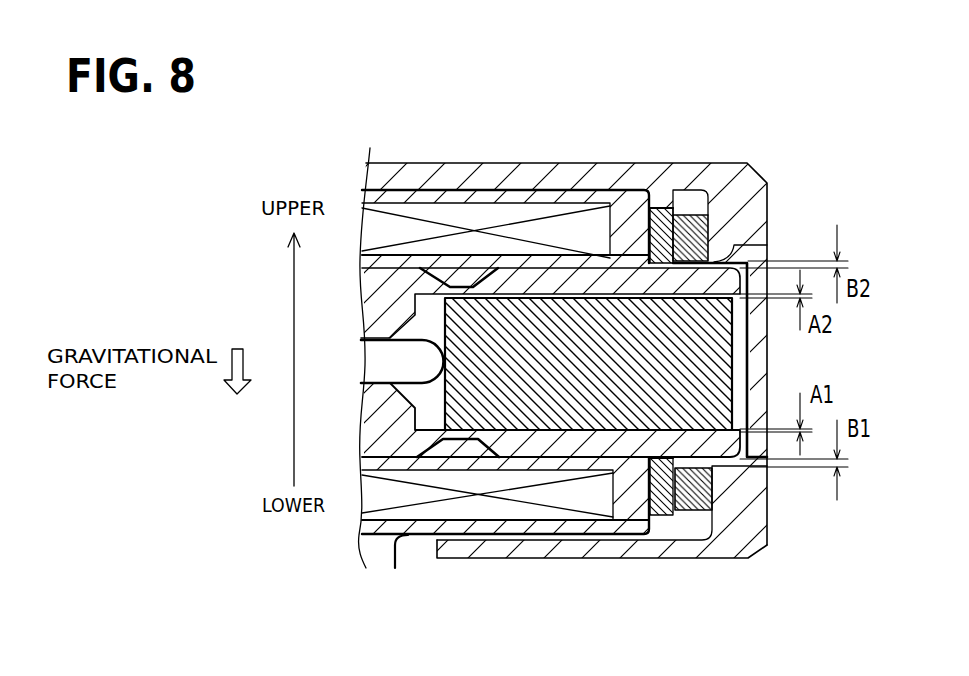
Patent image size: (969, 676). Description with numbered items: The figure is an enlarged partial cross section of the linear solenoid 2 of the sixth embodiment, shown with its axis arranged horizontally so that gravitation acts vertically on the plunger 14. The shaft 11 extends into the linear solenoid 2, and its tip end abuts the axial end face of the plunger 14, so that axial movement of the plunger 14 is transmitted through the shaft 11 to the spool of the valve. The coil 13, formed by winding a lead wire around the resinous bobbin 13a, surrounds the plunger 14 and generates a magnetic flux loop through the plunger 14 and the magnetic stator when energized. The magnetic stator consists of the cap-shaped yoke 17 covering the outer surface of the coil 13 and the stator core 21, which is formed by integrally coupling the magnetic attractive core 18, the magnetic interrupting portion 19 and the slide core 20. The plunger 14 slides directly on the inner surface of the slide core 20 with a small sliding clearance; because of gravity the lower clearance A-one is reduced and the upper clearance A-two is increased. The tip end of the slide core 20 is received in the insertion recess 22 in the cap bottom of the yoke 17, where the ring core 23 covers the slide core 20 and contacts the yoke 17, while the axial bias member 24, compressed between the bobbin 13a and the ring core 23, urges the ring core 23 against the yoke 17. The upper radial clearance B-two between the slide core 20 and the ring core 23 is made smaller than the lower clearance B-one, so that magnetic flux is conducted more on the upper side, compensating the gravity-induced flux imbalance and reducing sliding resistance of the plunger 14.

The linear solenoid 2 is at (706, 566).
The shaft 11 is at (400, 371).
The coil 13 is at (490, 541).
The resinous bobbin 13a is at (547, 462).
The plunger 14 is at (637, 370).
The yoke 17 is at (729, 178).
The magnetic attractive core 18 is at (398, 306).
The magnetic interrupting portion 19 is at (456, 292).
The slide core 20 is at (533, 283).
The stator core 21 is at (547, 114).
The insertion recess 22 is at (767, 244).
The ring core 23 is at (683, 210).
The axial bias member 24 is at (651, 203).